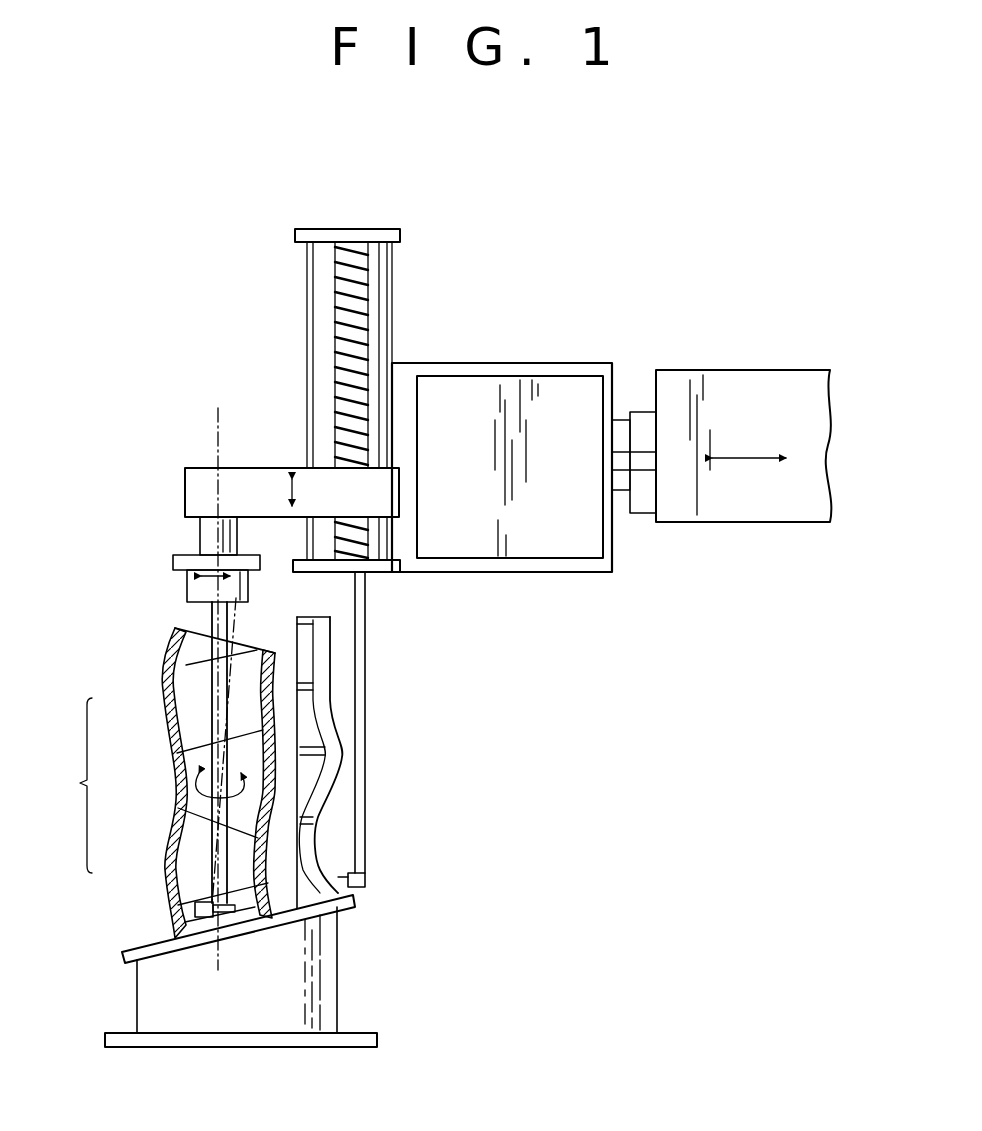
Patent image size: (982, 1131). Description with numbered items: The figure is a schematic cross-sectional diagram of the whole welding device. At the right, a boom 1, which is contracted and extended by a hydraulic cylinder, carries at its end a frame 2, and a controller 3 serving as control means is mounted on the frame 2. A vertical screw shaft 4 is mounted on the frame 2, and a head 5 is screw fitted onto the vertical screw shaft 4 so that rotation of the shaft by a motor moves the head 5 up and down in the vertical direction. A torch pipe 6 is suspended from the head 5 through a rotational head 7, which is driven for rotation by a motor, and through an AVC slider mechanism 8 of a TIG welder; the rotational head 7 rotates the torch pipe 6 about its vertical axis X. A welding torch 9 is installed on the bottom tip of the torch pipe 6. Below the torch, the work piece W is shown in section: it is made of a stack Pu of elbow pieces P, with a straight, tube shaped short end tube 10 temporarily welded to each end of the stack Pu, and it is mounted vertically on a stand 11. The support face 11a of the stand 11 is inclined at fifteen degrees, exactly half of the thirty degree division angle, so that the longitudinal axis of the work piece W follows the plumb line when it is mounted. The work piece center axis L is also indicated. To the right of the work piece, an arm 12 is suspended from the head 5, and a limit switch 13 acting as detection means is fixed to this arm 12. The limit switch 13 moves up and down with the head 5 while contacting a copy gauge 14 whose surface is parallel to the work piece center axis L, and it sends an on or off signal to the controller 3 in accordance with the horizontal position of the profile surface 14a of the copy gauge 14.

The boom 1 is at (737, 372).
The frame 2 is at (553, 573).
The controller 3 is at (560, 393).
The vertical screw shaft 4 is at (335, 290).
The head 5 is at (185, 488).
The torch pipe 6 is at (227, 862).
The rotational head 7 is at (200, 537).
The AVC slider mechanism 8 is at (187, 588).
The welding torch 9 is at (203, 917).
The short end tube 10 is at (177, 632).
The stand 11 is at (338, 995).
The support face 11a is at (138, 942).
The arm 12 is at (365, 680).
The limit switch 13 is at (367, 880).
The copy gauge 14 is at (337, 637).
The profile surface 14a is at (336, 790).
The vertical axis X is at (218, 430).
The work piece center axis L is at (212, 668).
The elbow piece P is at (162, 722).
The stack Pu is at (70, 795).
The work piece W is at (252, 640).